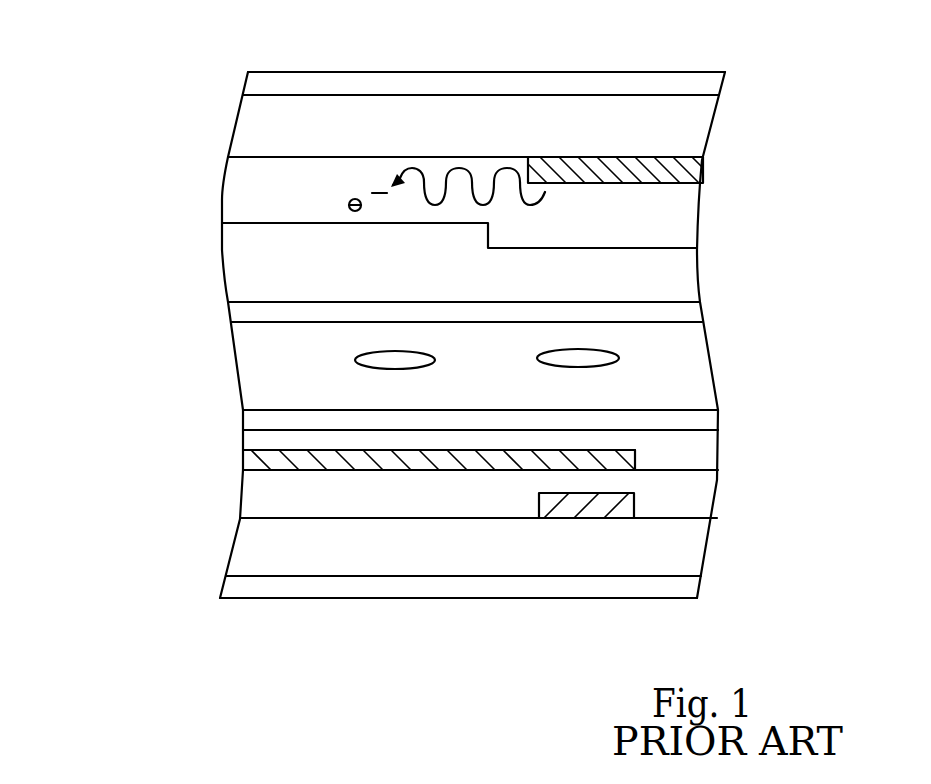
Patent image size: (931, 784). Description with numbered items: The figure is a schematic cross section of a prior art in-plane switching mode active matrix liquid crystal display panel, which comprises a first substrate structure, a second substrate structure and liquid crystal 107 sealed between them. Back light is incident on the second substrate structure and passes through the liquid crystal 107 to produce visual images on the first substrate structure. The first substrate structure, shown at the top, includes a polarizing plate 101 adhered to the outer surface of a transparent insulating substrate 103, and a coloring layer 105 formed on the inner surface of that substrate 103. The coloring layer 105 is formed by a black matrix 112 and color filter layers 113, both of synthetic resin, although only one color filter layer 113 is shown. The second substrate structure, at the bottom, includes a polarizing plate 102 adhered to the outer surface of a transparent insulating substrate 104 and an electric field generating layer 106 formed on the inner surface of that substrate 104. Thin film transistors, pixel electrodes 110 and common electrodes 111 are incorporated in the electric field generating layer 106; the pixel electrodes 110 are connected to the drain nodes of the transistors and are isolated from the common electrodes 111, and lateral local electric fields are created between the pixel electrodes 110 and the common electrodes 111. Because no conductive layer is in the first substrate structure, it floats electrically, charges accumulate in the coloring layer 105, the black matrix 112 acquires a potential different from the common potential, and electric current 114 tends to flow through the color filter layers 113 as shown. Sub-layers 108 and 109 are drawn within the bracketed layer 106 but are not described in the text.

The polarizing plate 101 is at (628, 70).
The polarizing plate 102 is at (670, 583).
The transparent insulating substrate 103 is at (698, 132).
The transparent insulating substrate 104 is at (696, 552).
The coloring layer 105 is at (697, 228).
The electric field generating layer 106 is at (137, 408).
The liquid crystal 107 is at (698, 366).
The insulating film 108 is at (252, 424).
The pixel electrode 109 is at (252, 494).
The pixel electrode 110 is at (318, 467).
The common electrode 111 is at (596, 512).
The black matrix 112 is at (580, 165).
The color filter layer 113 is at (240, 192).
The electric current 114 is at (447, 182).